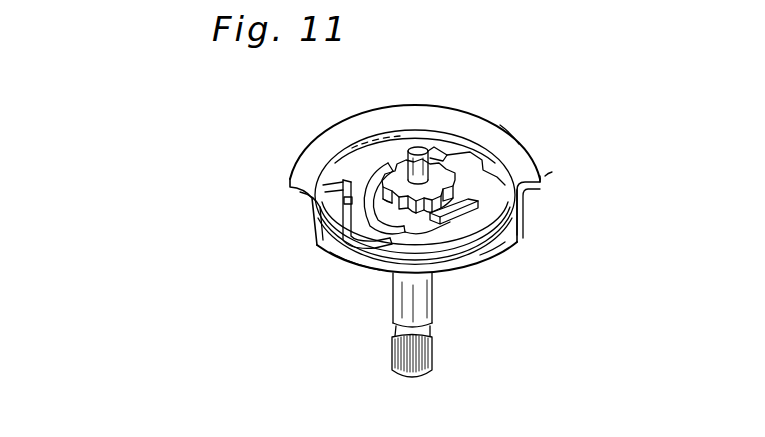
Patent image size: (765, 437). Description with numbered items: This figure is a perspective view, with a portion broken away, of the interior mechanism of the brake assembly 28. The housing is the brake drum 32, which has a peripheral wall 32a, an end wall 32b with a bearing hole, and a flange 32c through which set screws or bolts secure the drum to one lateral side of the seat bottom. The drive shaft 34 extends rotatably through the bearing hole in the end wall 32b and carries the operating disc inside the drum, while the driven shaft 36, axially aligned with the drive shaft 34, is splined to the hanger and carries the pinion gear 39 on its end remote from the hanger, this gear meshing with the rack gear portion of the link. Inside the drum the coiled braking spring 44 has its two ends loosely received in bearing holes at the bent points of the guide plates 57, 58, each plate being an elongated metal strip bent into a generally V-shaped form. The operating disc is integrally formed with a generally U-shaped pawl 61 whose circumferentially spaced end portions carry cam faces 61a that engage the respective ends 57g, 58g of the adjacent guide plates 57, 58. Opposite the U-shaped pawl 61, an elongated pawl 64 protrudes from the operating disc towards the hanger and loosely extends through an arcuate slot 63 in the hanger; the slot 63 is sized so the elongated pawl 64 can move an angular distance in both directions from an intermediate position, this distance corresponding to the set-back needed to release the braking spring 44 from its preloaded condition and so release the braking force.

The brake assembly 28 is at (533, 158).
The brake drum 32 is at (522, 222).
The peripheral wall 32a is at (520, 207).
The end wall 32b is at (362, 274).
The flange 32c is at (340, 120).
The drive shaft 34 is at (392, 355).
The driven shaft 36 is at (430, 147).
The pinion gear 39 is at (410, 160).
The coiled braking spring 44 is at (493, 240).
The guide plate 57 is at (548, 174).
The end of guide plate 57g is at (446, 153).
The guide plate 58 is at (348, 228).
The end of guide plate 58g is at (322, 205).
The U-shaped pawl 61 is at (350, 163).
The cam face 61a is at (292, 188).
The arcuate slot 63 is at (437, 228).
The elongated pawl 64 is at (456, 212).